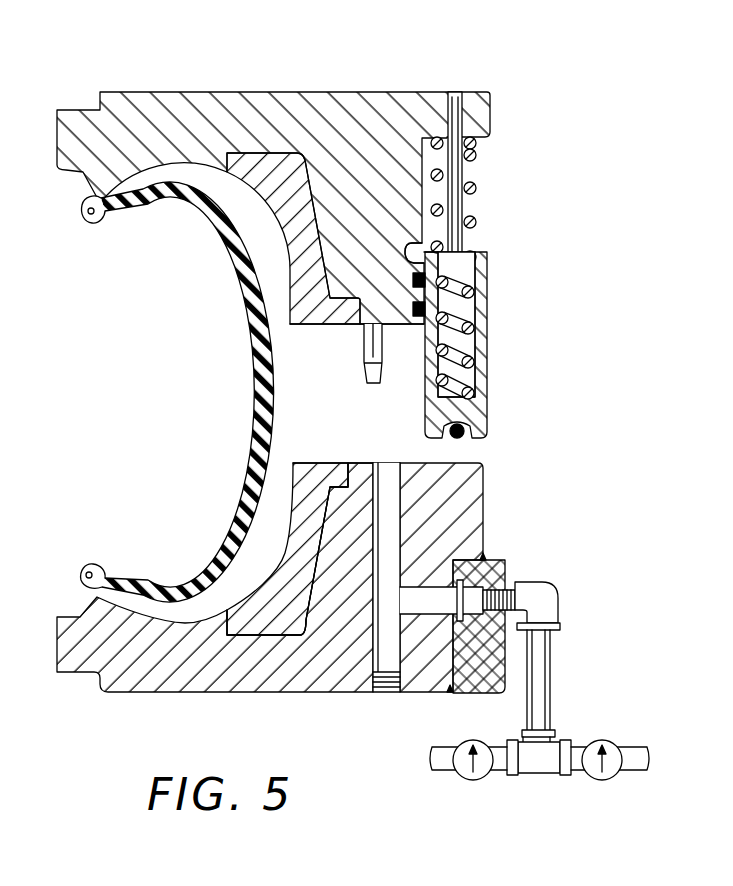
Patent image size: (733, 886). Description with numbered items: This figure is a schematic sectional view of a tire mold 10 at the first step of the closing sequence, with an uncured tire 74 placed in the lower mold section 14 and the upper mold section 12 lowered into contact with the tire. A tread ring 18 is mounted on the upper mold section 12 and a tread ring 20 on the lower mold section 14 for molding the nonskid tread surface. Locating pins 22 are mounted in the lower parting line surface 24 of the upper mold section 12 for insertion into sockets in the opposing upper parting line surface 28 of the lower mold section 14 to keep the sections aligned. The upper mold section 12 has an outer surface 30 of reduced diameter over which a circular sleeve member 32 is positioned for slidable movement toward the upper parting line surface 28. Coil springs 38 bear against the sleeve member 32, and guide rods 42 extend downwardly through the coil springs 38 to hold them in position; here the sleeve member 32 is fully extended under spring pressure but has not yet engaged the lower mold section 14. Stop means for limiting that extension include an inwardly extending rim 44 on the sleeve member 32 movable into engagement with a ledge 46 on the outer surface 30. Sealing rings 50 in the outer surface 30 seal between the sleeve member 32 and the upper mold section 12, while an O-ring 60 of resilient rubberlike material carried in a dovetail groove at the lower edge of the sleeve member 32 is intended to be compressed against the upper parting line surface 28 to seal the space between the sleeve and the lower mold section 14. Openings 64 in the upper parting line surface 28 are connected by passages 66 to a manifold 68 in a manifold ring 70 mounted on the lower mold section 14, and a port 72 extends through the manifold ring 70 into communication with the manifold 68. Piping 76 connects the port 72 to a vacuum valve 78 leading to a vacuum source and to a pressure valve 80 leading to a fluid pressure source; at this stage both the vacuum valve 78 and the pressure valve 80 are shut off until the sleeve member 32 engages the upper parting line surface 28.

The tire mold 10 is at (324, 80).
The upper mold section 12 is at (139, 96).
The lower mold section 14 is at (120, 693).
The tread ring 18 is at (253, 163).
The tread ring 20 is at (252, 630).
The locating pins 22 is at (360, 360).
The lower parting line surface 24 is at (357, 326).
The upper parting line surface 28 is at (368, 462).
The outer surface 30 is at (473, 302).
The circular sleeve member 32 is at (487, 263).
The coil springs 38 is at (477, 153).
The guide rods 42 is at (455, 113).
The inwardly extending rim 44 is at (424, 246).
The ledge 46 is at (408, 241).
The sealing rings 50 is at (412, 306).
The O-ring 60 is at (458, 440).
The openings 64 is at (398, 478).
The passages 66 is at (437, 600).
The manifold 68 is at (463, 592).
The manifold ring 70 is at (510, 655).
The port 72 is at (537, 595).
The tire 74 is at (250, 401).
The piping 76 is at (551, 703).
The vacuum valve 78 is at (467, 778).
The pressure valve 80 is at (594, 780).